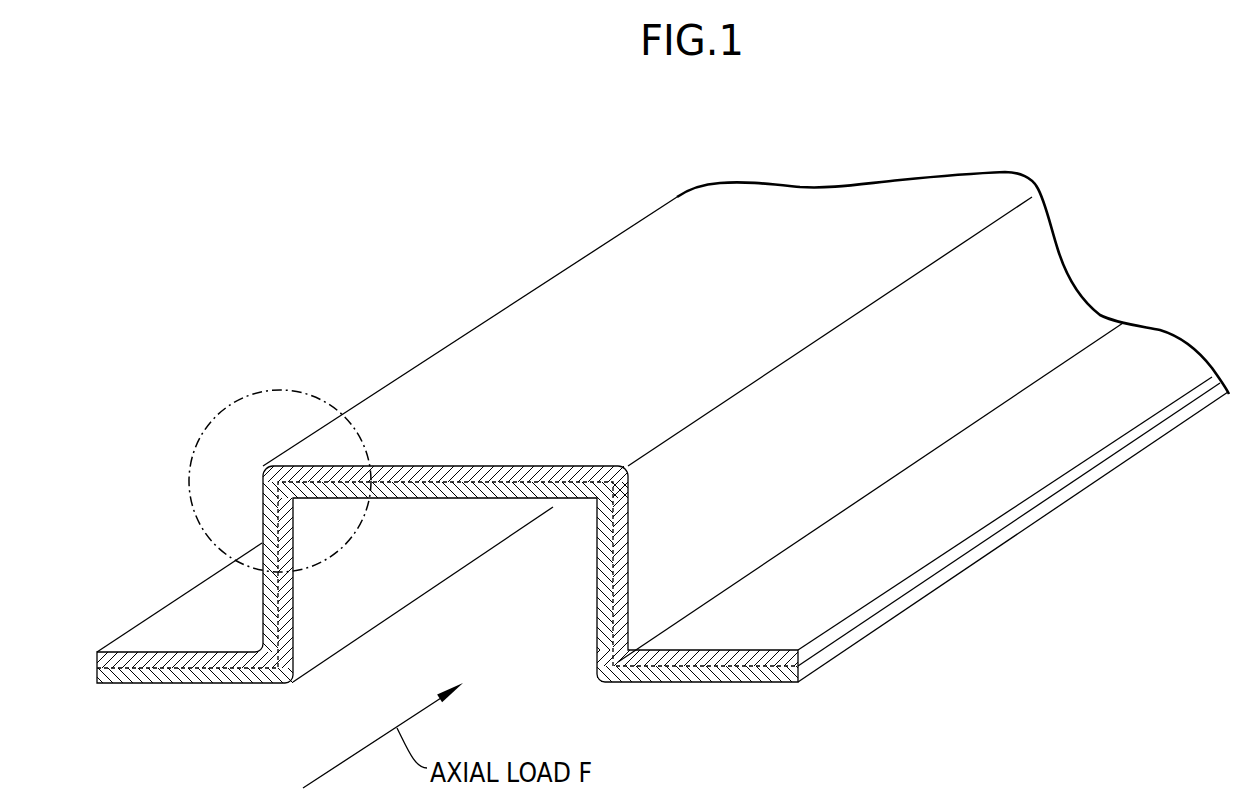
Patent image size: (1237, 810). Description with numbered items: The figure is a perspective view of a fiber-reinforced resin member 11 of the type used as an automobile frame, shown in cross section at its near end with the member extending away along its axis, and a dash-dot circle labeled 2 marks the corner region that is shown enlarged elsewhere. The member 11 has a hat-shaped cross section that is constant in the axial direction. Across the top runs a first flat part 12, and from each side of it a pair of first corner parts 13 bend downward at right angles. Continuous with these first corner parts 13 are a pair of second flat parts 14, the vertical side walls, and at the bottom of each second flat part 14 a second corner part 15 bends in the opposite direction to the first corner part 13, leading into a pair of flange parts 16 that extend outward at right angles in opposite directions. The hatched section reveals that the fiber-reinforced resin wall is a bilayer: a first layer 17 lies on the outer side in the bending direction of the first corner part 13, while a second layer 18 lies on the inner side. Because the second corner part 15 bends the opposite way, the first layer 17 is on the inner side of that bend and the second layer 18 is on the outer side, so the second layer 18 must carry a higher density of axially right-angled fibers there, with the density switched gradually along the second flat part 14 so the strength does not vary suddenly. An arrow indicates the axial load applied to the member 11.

The enlarged region shown in FIG. 2 is at (255, 382).
The fiber-reinforced resin member 11 is at (542, 237).
The first flat part 12 is at (640, 255).
The first corner part 13 is at (490, 320).
The second flat part 14 is at (1027, 293).
The second corner part 15 is at (329, 655).
The flange part 16 is at (203, 610).
The first layer 17 is at (459, 467).
The second layer 18 is at (500, 487).